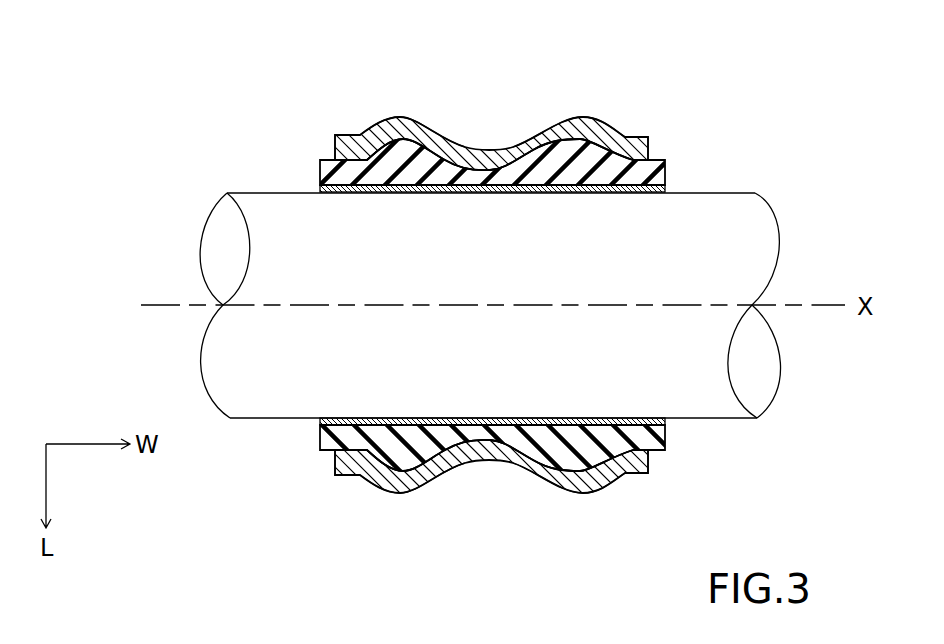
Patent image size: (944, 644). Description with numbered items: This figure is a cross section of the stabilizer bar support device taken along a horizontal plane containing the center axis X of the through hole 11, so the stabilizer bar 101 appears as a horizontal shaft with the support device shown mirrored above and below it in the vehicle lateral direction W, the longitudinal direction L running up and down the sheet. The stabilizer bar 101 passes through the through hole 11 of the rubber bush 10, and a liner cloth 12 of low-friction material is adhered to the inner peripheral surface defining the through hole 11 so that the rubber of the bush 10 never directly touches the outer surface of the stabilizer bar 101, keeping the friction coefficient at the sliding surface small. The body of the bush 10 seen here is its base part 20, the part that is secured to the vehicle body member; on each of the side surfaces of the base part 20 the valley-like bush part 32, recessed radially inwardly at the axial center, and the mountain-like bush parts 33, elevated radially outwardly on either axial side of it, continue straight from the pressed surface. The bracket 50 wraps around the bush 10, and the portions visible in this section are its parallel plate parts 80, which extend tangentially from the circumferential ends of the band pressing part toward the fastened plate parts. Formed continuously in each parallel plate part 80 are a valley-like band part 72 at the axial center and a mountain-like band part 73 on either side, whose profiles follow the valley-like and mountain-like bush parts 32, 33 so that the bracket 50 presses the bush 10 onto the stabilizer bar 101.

The bush 10 is at (482, 307).
The through hole 11 is at (336, 212).
The liner cloth 12 is at (318, 190).
The base part 20 is at (320, 436).
The valley-like bush part 32 is at (491, 168).
The mountain-like bush part 33 is at (410, 139).
The bracket 50 is at (496, 307).
The valley-like band part 72 is at (502, 147).
The mountain-like band part 73 is at (395, 117).
The parallel plate part 80 is at (342, 135).
The stabilizer bar 101 is at (732, 192).